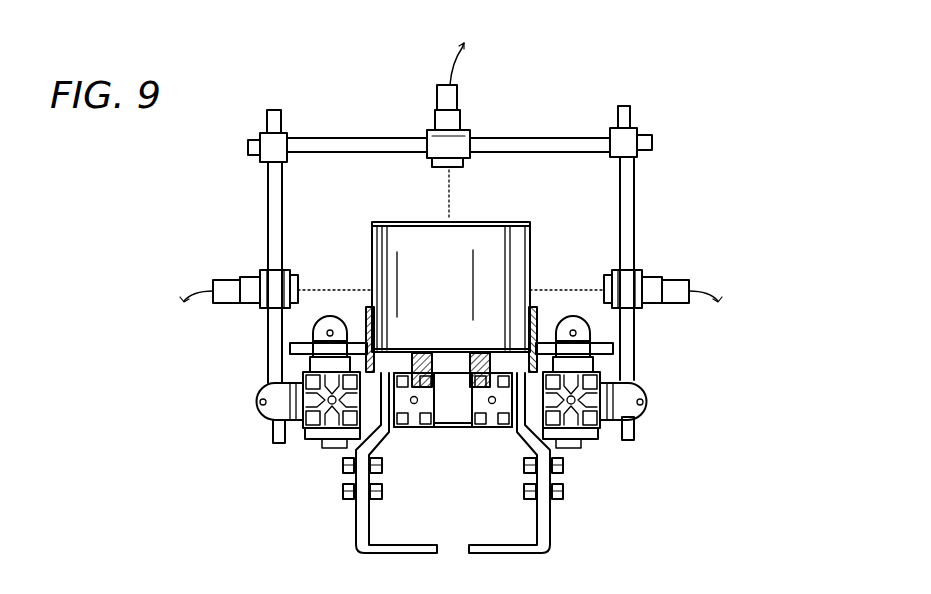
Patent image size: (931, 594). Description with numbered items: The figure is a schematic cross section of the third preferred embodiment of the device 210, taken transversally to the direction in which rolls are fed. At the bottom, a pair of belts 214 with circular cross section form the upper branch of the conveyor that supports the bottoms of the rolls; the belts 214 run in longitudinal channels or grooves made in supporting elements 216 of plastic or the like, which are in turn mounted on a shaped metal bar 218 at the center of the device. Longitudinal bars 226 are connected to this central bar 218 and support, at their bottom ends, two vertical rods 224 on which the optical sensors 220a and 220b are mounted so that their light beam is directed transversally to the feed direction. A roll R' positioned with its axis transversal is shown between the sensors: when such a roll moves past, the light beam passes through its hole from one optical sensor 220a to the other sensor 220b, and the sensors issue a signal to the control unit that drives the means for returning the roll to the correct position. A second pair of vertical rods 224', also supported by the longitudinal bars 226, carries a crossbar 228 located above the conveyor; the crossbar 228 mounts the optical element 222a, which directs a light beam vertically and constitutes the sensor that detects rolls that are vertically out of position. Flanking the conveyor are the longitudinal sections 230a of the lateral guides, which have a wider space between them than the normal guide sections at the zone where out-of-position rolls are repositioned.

The device 210 is at (688, 108).
The belts 214 is at (323, 448).
The supporting elements 216 is at (343, 490).
The shaped metal bar 218 is at (452, 428).
The optical sensor 220a is at (252, 284).
The optical sensor 220b is at (676, 282).
The optical element 222a is at (438, 120).
The vertical rods 224 is at (470, 371).
The vertical rods 224' is at (453, 212).
The longitudinal bars 226 is at (410, 352).
The crossbar 228 is at (335, 147).
The longitudinal sections 230a is at (367, 308).
The roll R' is at (476, 210).